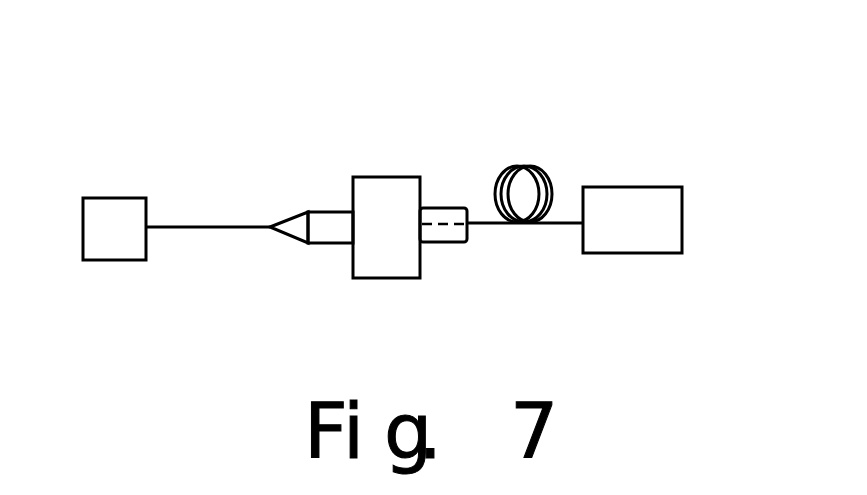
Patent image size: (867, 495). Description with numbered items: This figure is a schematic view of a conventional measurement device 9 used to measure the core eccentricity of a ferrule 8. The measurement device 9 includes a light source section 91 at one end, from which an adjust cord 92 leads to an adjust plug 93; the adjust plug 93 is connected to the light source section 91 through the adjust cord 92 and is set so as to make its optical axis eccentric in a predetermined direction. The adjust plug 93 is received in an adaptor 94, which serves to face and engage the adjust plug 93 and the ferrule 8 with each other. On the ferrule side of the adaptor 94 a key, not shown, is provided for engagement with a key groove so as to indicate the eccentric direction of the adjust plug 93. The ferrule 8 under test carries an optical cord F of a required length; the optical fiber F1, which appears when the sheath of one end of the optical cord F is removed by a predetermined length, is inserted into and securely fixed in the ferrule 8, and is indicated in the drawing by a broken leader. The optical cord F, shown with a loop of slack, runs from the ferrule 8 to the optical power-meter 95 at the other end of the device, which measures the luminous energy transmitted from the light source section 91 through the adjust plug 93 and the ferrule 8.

The measurement device 9 is at (225, 150).
The light source section 91 is at (108, 259).
The adjust cord 92 is at (238, 227).
The adjust plug 93 is at (313, 211).
The adaptor 94 is at (385, 177).
The optical power-meter 95 is at (638, 187).
The ferrule 8 is at (443, 243).
The optical cord F is at (555, 223).
The optical fiber F1 is at (443, 223).